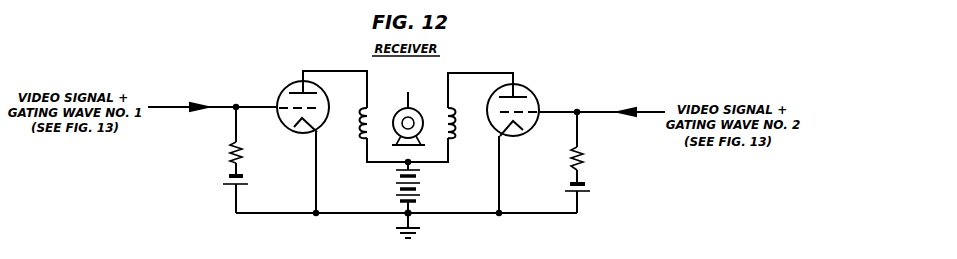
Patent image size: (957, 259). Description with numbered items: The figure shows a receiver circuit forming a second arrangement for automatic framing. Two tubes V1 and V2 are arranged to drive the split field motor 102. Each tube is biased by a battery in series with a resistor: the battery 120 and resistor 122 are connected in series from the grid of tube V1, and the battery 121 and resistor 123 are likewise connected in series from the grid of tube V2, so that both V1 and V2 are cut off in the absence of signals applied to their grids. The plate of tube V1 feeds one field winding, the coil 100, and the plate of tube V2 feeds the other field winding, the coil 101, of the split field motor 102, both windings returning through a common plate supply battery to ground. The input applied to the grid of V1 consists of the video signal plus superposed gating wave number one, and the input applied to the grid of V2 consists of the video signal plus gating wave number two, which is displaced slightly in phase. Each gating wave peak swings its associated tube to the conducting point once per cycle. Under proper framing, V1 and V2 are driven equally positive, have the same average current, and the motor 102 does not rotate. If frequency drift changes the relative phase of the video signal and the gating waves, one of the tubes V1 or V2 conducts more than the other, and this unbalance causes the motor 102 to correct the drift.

The coil / inductor in plate circuit of V1 100 is at (358, 139).
The coil / inductor in plate circuit of V2 101 is at (458, 139).
The split field motor 102 is at (414, 110).
The battery 120 is at (247, 182).
The battery 121 is at (568, 189).
The resistor 122 is at (244, 155).
The resistor 123 is at (571, 157).
The tube V1 is at (288, 86).
The tube V2 is at (528, 88).